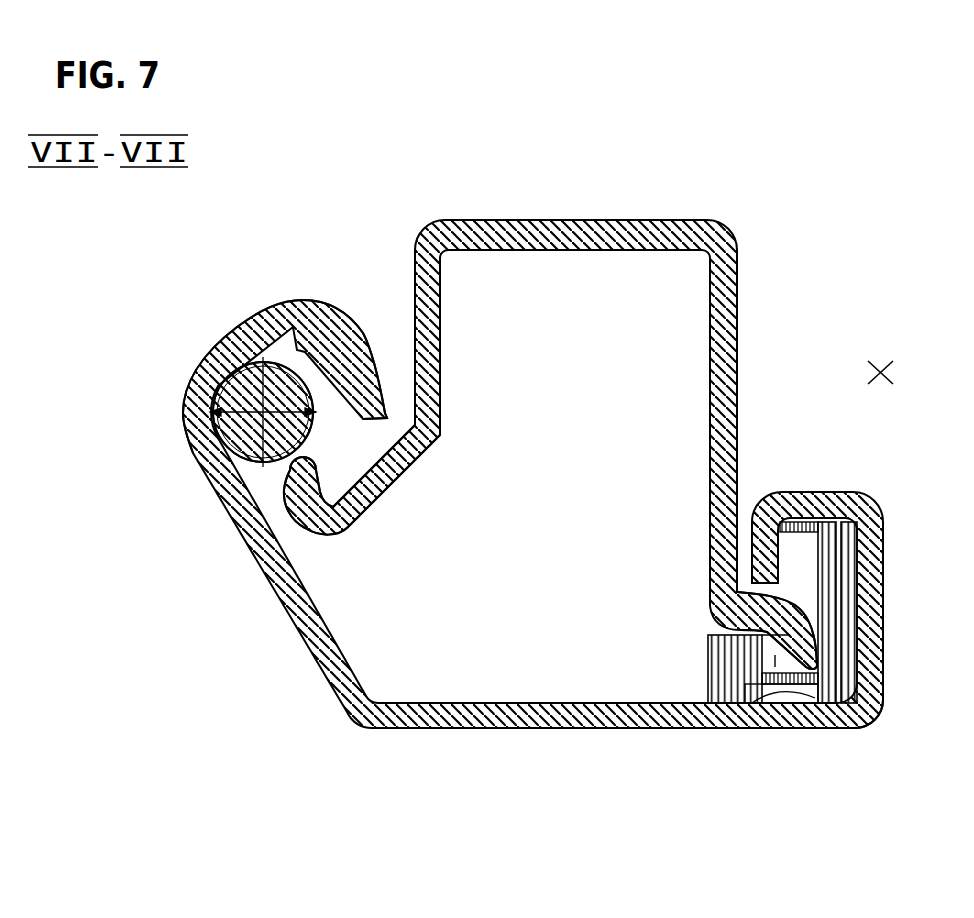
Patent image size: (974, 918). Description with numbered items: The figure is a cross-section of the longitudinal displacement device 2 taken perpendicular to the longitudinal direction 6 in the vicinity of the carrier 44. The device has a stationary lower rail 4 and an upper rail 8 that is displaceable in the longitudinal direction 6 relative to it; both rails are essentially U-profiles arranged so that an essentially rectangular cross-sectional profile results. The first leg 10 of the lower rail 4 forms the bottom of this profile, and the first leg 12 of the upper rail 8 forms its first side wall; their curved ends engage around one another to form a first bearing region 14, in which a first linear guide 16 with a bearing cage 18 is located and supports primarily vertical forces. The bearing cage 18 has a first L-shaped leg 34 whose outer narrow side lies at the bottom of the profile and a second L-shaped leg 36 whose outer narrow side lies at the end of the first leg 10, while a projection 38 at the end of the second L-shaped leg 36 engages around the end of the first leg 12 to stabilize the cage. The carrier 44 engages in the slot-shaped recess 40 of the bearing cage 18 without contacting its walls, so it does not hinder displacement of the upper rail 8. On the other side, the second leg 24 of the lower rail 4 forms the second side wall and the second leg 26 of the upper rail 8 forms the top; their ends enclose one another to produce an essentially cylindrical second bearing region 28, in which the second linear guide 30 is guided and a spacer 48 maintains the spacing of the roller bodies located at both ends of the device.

The longitudinal displacement device 2 is at (692, 188).
The lower rail 4 is at (283, 621).
The longitudinal direction 6 is at (884, 372).
The upper rail 8 is at (742, 285).
The first leg of the lower rail 10 is at (492, 729).
The first leg of the upper rail 12 is at (738, 363).
The first bearing region 14 is at (806, 619).
The first linear guide 16 is at (842, 553).
The bearing cage 18 is at (878, 718).
The second leg of the lower rail 24 is at (237, 335).
The second leg of the upper rail 26 is at (408, 458).
The second bearing region 28 is at (290, 352).
The second linear guide 30 is at (247, 412).
The first L-shaped leg 34 is at (707, 668).
The second L-shaped leg 36 is at (860, 602).
The projection 38 is at (797, 522).
The recess 40 is at (776, 660).
The carrier 44 is at (823, 703).
The spacer 48 is at (240, 452).